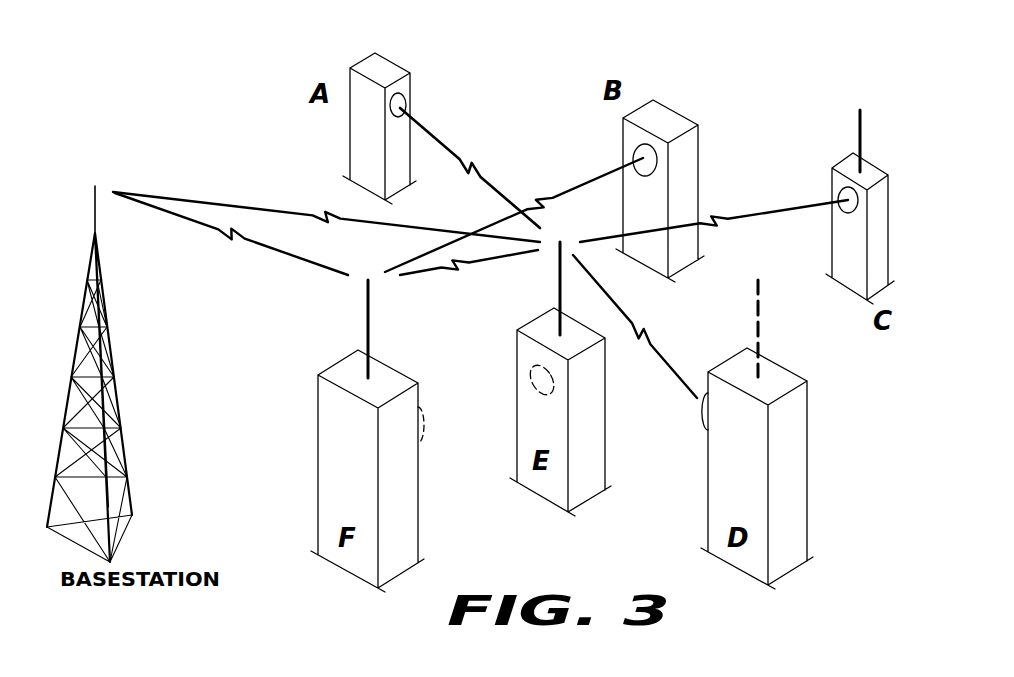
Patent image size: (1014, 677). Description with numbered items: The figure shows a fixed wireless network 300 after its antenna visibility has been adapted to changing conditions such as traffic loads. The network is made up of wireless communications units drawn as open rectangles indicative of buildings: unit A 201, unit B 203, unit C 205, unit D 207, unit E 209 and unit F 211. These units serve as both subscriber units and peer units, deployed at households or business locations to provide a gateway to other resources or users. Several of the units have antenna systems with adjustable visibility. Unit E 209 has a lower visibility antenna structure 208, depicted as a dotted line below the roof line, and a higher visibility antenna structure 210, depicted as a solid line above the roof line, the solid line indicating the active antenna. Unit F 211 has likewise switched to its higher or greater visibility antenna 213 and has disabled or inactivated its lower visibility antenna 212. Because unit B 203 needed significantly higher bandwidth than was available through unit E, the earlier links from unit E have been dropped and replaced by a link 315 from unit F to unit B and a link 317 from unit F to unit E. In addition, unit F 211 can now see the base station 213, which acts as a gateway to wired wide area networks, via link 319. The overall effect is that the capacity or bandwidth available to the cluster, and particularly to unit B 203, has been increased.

The wireless communications unit A 201 is at (394, 64).
The wireless communications unit B 203 is at (679, 114).
The wireless communications unit C 205 is at (845, 157).
The wireless communications unit D 207 is at (707, 463).
The lower visibility antenna structure 208 is at (532, 364).
The wireless communications unit E 209 is at (516, 431).
The higher visibility antenna structure 210 is at (558, 293).
The wireless communications unit F 211 is at (317, 465).
The lower visibility antenna 212 is at (423, 428).
The higher visibility antenna / base station 213 is at (113, 370).
The fixed wireless network 300 is at (632, 572).
The link 315 is at (590, 180).
The link 317 is at (437, 274).
The link 319 is at (170, 218).